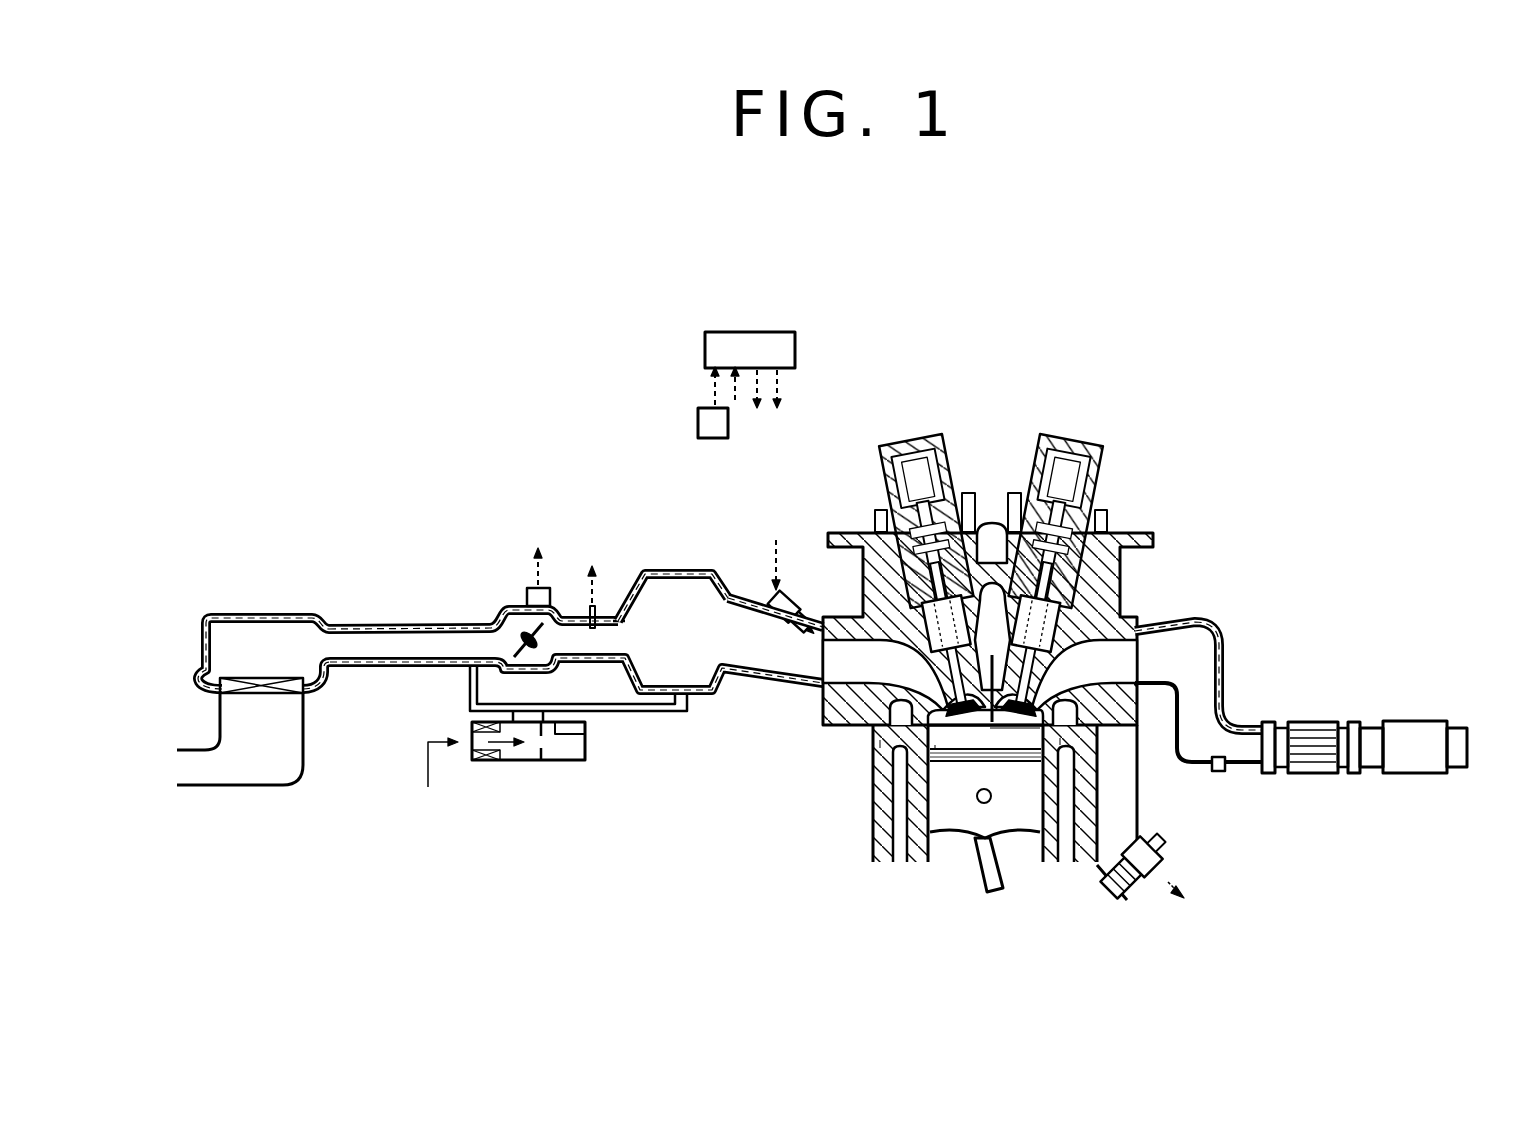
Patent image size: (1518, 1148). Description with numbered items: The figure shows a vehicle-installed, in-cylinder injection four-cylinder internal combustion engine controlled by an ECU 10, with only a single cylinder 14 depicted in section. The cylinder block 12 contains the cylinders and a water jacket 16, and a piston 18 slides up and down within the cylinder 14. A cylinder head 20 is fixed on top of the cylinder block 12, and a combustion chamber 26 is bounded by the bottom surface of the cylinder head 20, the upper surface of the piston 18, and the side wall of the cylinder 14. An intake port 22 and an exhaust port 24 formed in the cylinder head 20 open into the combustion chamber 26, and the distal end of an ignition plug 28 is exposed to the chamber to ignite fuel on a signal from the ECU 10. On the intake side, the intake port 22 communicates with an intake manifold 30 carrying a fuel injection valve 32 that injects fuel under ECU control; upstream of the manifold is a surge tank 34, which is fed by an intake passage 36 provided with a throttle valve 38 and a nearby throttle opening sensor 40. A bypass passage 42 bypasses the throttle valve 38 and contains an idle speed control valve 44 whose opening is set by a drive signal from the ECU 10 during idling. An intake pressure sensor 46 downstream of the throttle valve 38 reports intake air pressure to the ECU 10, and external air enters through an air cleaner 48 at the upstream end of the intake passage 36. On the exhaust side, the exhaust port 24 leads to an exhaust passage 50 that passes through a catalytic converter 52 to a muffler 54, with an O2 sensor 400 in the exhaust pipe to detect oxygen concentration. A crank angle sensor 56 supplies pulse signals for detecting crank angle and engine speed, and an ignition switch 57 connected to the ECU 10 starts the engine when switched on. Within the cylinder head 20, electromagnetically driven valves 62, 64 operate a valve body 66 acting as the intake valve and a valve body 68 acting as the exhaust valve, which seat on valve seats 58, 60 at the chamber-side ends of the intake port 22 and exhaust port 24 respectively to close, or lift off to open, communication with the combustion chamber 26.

The ECU 10 is at (795, 350).
The cylinder block 12 is at (873, 848).
The cylinder 14 is at (1040, 850).
The water jacket 16 is at (900, 852).
The piston 18 is at (962, 842).
The cylinder head 20 is at (872, 690).
The intake port 22 is at (835, 690).
The exhaust port 24 is at (1120, 650).
The combustion chamber 26 is at (1005, 750).
The ignition plug 28 is at (965, 752).
The intake manifold 30 is at (720, 692).
The fuel injection valve 32 is at (792, 598).
The surge tank 34 is at (692, 574).
The intake passage 36 is at (617, 612).
The throttle valve 38 is at (520, 632).
The throttle opening sensor 40 is at (528, 592).
The bypass passage 42 is at (468, 692).
The idle speed control valve 44 is at (505, 762).
The intake pressure sensor 46 is at (586, 603).
The air cleaner 48 is at (265, 613).
The exhaust passage 50 is at (1200, 652).
The catalytic converter 52 is at (1308, 722).
The muffler 54 is at (1408, 722).
The crank angle sensor 56 is at (1165, 865).
The ignition switch 57 is at (698, 420).
The valve seat 58 is at (905, 732).
The valve seat 60 is at (1097, 725).
The electromagnetically driven valve 62 is at (961, 466).
The electromagnetically driven valve 64 is at (1029, 466).
The valve body 66 is at (940, 745).
The valve body 68 is at (1075, 745).
The O2 sensor 400 is at (1225, 770).